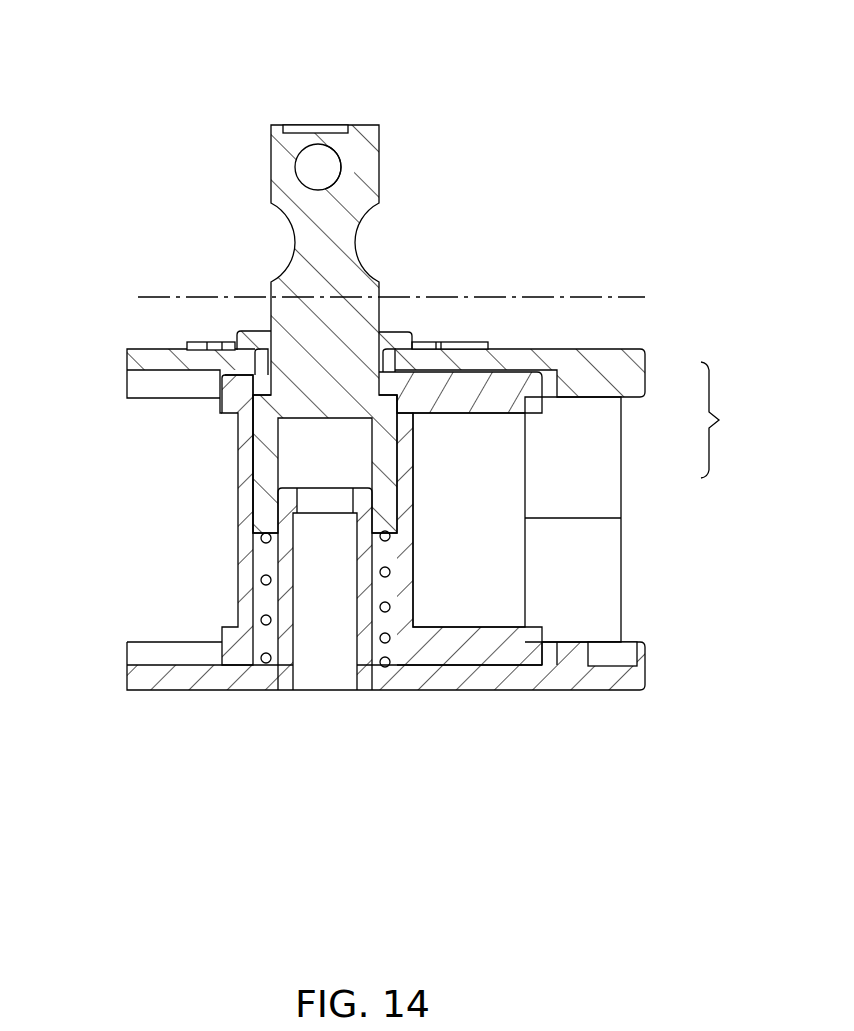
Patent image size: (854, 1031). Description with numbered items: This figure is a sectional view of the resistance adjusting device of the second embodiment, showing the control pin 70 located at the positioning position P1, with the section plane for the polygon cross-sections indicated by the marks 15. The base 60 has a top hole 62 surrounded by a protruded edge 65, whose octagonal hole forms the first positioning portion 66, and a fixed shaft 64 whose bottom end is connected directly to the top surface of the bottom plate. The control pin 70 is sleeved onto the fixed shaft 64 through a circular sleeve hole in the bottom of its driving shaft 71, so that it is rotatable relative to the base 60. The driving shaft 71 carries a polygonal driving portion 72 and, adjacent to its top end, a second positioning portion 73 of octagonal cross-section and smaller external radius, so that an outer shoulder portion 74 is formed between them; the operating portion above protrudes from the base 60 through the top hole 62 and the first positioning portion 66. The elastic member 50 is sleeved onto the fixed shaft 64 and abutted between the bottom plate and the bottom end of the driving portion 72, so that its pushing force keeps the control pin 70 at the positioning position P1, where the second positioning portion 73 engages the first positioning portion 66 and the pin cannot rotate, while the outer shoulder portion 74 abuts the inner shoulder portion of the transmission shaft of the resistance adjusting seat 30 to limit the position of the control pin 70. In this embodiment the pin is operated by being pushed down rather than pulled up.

The positioning position P1 is at (400, 88).
The section line of FIG. 15 is at (172, 297).
The resistance adjusting seat 30 is at (228, 581).
The elastic member 50 is at (390, 572).
The base 60 is at (125, 336).
The top hole 62 is at (256, 363).
The fixed shaft 64 is at (363, 613).
The protruded edge 65 is at (262, 343).
The first positioning portion 66 is at (398, 325).
The control pin 70 is at (257, 152).
The driving shaft 71 is at (729, 420).
The driving portion 72 is at (385, 470).
The second positioning portion 73 is at (333, 372).
The outer shoulder portion 74 is at (260, 402).